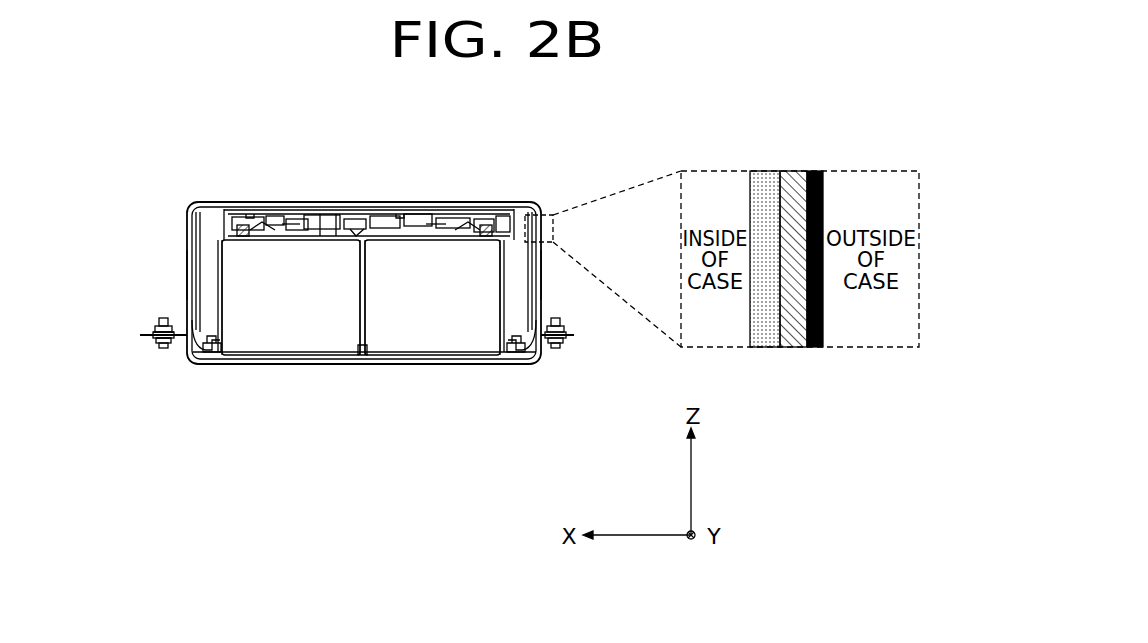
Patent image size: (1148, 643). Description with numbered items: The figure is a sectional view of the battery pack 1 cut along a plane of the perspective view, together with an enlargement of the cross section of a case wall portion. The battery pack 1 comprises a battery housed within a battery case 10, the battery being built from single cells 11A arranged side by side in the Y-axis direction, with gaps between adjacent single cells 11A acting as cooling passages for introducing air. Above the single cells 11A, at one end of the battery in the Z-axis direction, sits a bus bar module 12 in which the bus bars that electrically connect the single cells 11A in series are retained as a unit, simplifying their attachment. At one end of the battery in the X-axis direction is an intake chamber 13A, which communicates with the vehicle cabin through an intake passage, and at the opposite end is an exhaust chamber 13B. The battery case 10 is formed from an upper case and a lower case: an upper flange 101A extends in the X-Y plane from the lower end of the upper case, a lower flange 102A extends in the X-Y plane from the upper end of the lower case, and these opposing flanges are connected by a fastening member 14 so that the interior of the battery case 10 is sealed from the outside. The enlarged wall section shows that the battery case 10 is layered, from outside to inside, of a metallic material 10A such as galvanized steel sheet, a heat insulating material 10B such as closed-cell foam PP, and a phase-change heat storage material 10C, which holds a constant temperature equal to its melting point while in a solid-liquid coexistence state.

The battery pack 1 is at (497, 180).
The bus bar module 12 is at (509, 221).
The battery case 10 is at (416, 207).
The metallic material 10A is at (815, 171).
The heat insulating material 10B is at (793, 171).
The phase-change heat storage material 10C is at (765, 171).
The single cell 11A is at (300, 343).
The intake chamber 13A is at (536, 262).
The exhaust chamber 13B is at (186, 240).
The fastening member 14 is at (165, 318).
The upper flange 101A is at (150, 334).
The lower flange 102A is at (165, 345).